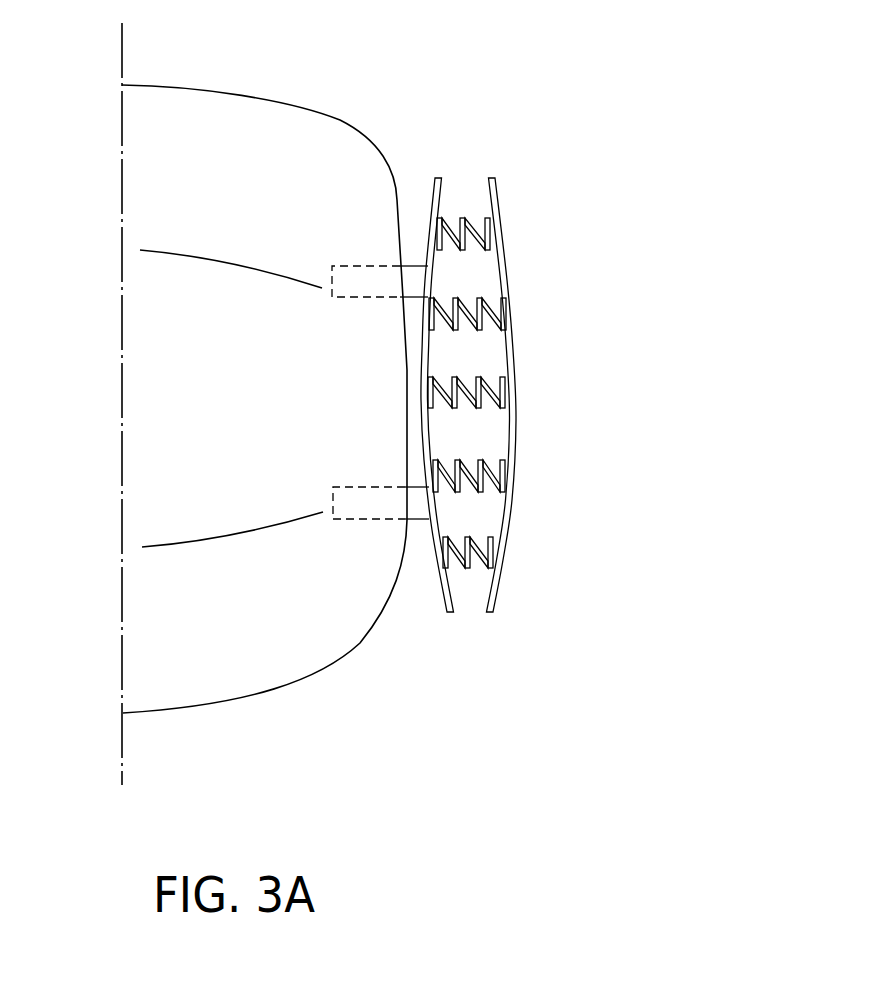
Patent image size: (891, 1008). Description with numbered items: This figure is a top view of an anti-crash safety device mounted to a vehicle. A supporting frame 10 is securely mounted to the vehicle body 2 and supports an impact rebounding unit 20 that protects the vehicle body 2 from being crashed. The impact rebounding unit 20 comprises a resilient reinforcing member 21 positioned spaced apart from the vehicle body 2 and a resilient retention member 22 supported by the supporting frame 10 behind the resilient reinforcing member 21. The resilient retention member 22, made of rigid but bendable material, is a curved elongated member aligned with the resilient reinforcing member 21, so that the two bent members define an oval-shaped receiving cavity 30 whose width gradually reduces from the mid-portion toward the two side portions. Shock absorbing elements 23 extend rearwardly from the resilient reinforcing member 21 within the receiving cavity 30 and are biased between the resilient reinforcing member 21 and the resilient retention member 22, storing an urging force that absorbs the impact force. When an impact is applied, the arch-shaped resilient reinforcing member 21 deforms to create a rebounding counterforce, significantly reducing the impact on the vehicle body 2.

The vehicle body 2 is at (287, 598).
The supporting frame 10 is at (415, 275).
The impact rebounding unit 20 is at (732, 523).
The resilient reinforcing member 21 is at (512, 350).
The resilient retention member 22 is at (447, 593).
The shock absorbing element 23 is at (482, 462).
The receiving cavity 30 is at (544, 306).